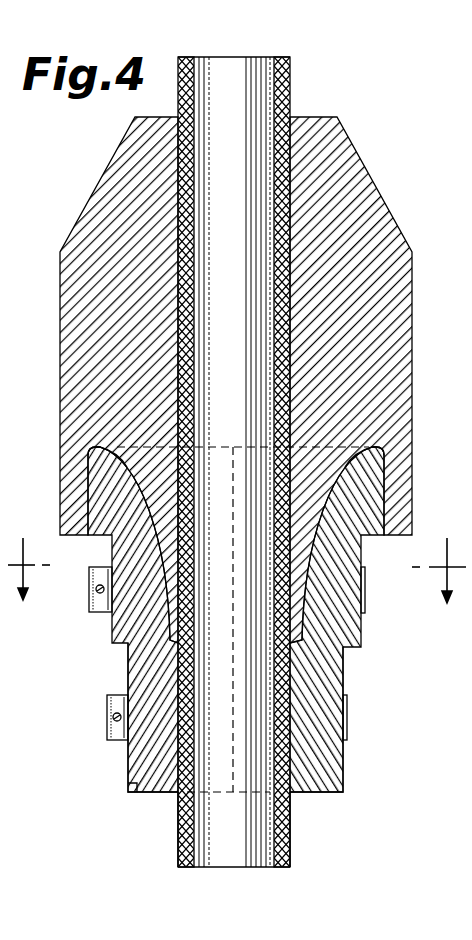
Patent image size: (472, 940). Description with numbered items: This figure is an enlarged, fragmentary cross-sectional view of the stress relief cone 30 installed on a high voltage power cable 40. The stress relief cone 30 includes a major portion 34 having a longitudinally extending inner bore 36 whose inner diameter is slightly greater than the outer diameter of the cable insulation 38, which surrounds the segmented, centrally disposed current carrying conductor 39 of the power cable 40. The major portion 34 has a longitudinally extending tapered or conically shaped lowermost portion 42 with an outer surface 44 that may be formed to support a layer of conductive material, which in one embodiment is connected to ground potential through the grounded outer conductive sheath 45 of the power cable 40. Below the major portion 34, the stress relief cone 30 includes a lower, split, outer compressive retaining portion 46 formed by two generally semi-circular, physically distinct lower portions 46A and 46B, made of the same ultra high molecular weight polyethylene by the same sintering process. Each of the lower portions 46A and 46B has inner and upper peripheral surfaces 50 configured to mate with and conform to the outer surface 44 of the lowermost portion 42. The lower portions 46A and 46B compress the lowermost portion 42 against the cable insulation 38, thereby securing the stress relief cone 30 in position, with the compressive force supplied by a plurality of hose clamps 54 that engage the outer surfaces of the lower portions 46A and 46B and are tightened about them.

The stress relief cone 30 is at (397, 107).
The major portion 34 is at (116, 172).
The inner bore 36 is at (279, 116).
The cable insulation 38 is at (184, 57).
The current carrying conductor 39 is at (233, 75).
The high voltage power cable 40 is at (168, 845).
The lowermost portion 42 is at (315, 652).
The outer surface 44 is at (163, 643).
The outer conductive sheath 45 is at (291, 845).
The outer compressive retaining portion 46 is at (126, 766).
The lower portion 46A is at (130, 790).
The lower portion 46B is at (336, 793).
The inner and upper peripheral surfaces 50 is at (133, 465).
The hose clamps 54 is at (90, 593).